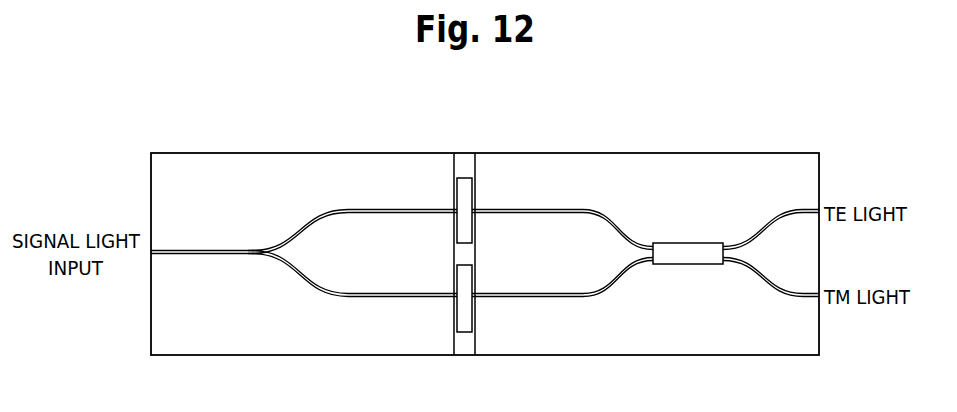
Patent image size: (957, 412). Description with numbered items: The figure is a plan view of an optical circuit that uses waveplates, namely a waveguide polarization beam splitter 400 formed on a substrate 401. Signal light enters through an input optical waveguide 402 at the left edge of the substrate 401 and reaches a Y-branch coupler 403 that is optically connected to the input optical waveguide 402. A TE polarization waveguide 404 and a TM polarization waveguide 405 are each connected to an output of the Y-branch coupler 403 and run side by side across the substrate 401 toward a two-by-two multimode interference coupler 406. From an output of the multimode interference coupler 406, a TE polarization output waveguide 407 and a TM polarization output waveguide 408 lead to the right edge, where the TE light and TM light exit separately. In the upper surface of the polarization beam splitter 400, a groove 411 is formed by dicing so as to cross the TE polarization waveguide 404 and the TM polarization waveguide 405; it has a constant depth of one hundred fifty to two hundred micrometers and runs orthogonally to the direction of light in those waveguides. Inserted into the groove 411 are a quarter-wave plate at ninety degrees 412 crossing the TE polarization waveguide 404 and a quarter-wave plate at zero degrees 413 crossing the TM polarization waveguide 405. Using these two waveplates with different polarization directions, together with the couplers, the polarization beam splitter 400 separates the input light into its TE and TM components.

The polarization beam splitter 400 is at (518, 125).
The substrate 401 is at (722, 153).
The input optical waveguide 402 is at (195, 250).
The Y-branch coupler 403 is at (254, 256).
The TE polarization waveguide 404 is at (375, 209).
The TM polarization waveguide 405 is at (379, 293).
The 2×2 multimode interference (MMI) coupler 406 is at (686, 243).
The TE polarization output waveguide 407 is at (767, 216).
The TM polarization output waveguide 408 is at (765, 292).
The groove 411 is at (477, 336).
The λ/4 waveplate (90 degrees) 412 is at (466, 333).
The λ/4 waveplate (0 degrees) 413 is at (466, 178).